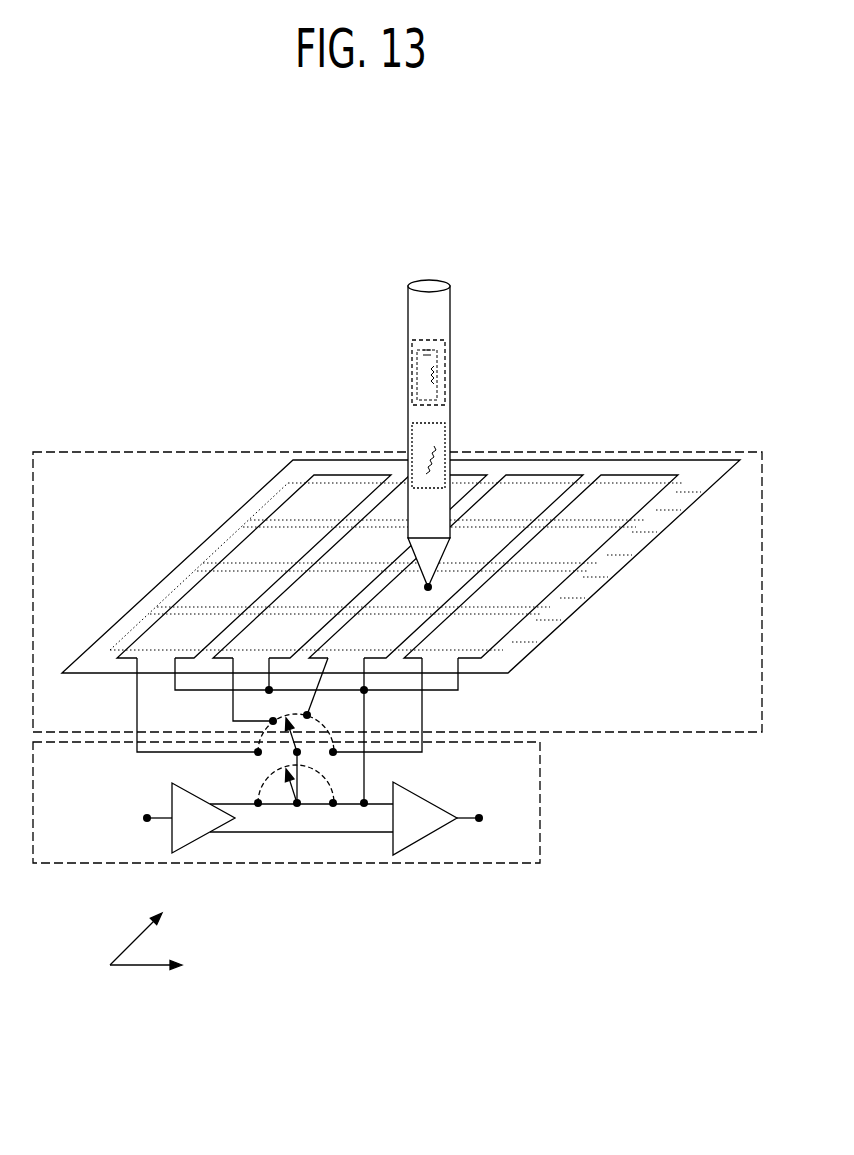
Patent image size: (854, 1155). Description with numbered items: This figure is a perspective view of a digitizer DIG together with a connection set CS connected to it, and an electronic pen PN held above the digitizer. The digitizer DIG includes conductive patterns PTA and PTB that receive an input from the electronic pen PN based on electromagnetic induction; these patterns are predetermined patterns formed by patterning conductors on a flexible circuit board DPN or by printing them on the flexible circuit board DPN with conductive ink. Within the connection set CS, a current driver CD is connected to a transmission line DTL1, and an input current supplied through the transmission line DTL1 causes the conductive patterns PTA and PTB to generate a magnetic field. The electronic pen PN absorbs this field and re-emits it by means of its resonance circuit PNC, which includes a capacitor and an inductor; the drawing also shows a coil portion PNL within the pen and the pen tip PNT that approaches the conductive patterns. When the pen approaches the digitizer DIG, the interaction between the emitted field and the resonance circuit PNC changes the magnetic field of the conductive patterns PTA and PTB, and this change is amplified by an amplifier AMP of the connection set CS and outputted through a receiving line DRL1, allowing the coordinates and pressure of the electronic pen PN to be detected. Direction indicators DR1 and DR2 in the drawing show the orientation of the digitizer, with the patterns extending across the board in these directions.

The electronic pen PN is at (409, 286).
The resonance circuit PNC is at (443, 341).
The pen coil (inductor) PNL is at (443, 424).
The pen tip PNT is at (430, 587).
The digitizer DIG is at (622, 452).
The flexible circuit board DPN is at (177, 568).
The conductive pattern PTA is at (333, 474).
The conductive pattern PTB is at (270, 503).
The connection set CS is at (540, 795).
The current driver CD is at (203, 818).
The amplifier AMP is at (425, 818).
The transmission line DTL1 is at (135, 818).
The receiving line DRL1 is at (494, 818).
The first direction DR1 is at (148, 926).
The second direction DR2 is at (165, 967).